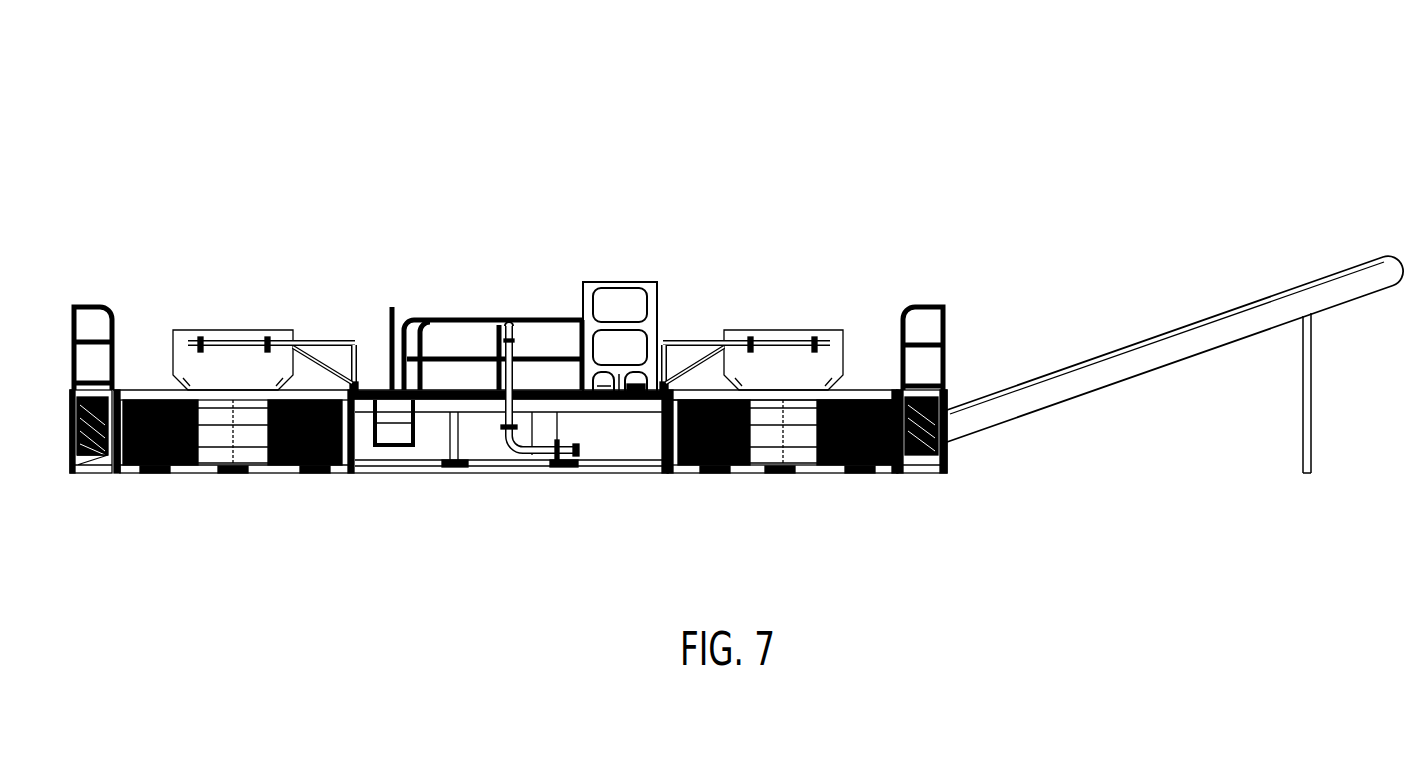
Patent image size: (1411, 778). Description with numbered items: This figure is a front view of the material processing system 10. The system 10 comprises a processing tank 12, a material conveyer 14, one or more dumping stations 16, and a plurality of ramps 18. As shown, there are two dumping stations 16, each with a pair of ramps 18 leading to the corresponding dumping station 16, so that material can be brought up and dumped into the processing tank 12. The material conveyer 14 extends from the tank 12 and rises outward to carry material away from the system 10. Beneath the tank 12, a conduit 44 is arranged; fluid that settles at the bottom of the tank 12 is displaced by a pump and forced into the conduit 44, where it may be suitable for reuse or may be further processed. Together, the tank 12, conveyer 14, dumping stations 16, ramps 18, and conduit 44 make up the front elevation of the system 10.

The material processing system 10 is at (547, 137).
The processing tank 12 is at (622, 463).
The material conveyer 14 is at (1175, 345).
The dumping station 16 is at (226, 300).
The ramp 18 is at (867, 468).
The conduit 44 is at (538, 452).